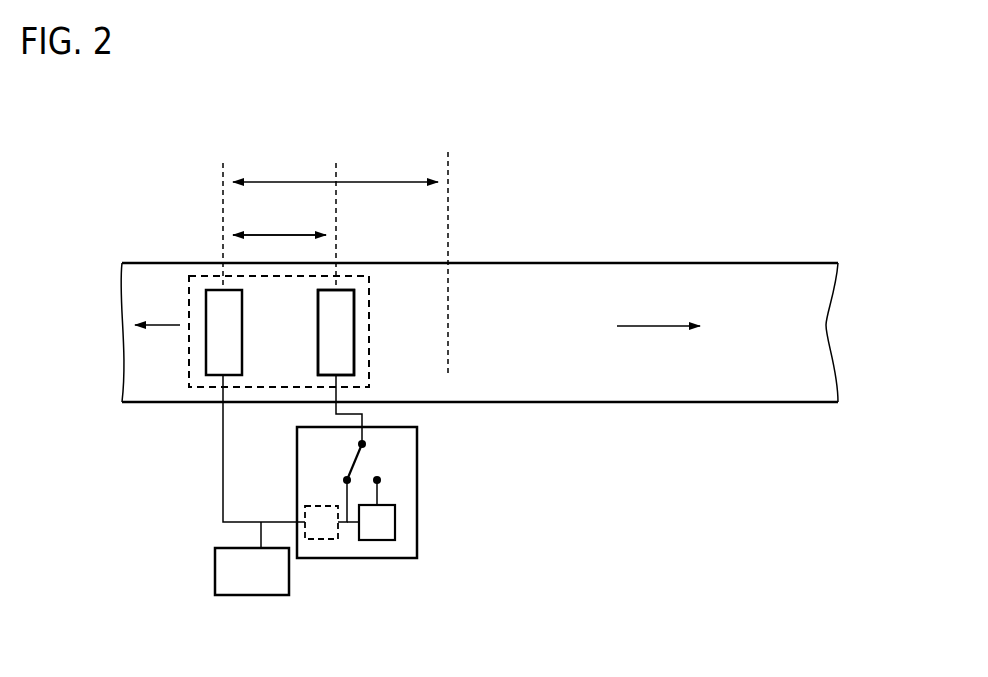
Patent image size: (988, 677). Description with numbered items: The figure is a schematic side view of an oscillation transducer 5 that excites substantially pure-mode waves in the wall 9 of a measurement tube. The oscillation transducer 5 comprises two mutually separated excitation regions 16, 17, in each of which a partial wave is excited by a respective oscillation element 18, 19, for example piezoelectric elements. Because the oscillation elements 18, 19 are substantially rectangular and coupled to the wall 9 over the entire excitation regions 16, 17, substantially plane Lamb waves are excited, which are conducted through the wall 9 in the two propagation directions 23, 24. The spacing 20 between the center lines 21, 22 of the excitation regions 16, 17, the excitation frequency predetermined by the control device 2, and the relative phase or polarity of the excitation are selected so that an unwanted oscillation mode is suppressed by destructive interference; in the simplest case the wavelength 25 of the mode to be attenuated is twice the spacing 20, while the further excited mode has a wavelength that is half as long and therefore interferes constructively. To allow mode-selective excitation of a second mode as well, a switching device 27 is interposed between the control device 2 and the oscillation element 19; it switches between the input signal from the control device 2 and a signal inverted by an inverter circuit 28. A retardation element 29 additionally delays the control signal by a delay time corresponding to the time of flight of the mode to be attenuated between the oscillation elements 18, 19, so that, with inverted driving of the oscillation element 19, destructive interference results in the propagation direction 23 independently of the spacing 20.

The control device 2 is at (213, 578).
The oscillation transducer 5 is at (205, 388).
The wall 9 is at (668, 272).
The excitation region 16 is at (183, 296).
The excitation region 17 is at (363, 336).
The oscillation element 18 is at (208, 289).
The oscillation element 19 is at (318, 332).
The spacing 20 is at (287, 235).
The center line 21 is at (223, 176).
The center line 22 is at (336, 176).
The propagation direction 23 is at (657, 326).
The propagation direction 24 is at (163, 327).
The wavelength 25 is at (391, 180).
The switching device 27 is at (417, 450).
The inverter circuit 28 is at (381, 541).
The retardation element 29 is at (321, 541).